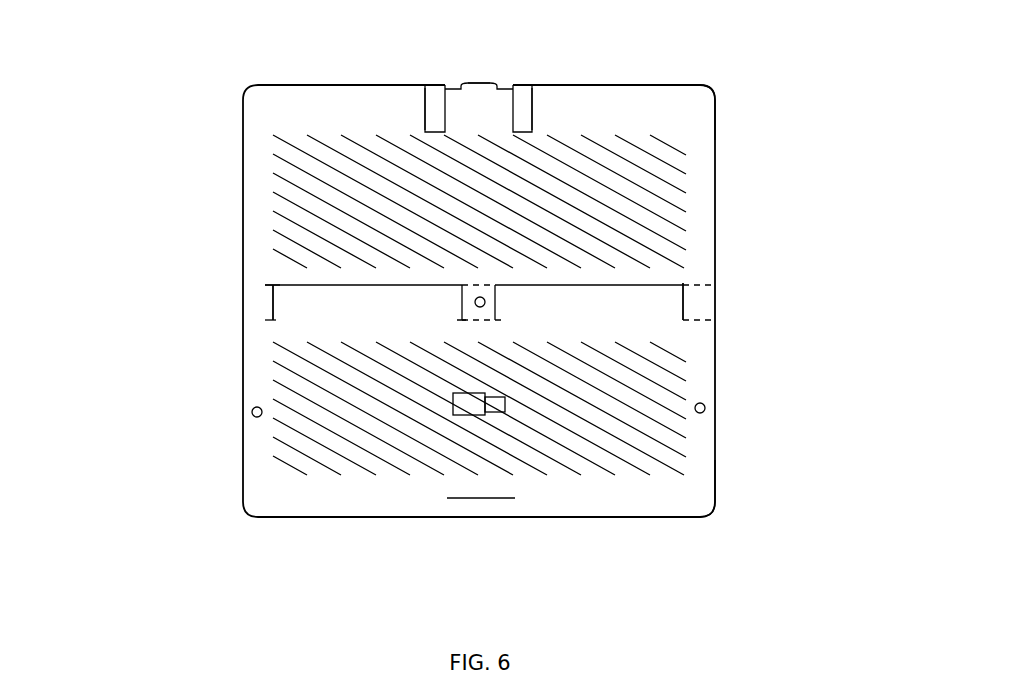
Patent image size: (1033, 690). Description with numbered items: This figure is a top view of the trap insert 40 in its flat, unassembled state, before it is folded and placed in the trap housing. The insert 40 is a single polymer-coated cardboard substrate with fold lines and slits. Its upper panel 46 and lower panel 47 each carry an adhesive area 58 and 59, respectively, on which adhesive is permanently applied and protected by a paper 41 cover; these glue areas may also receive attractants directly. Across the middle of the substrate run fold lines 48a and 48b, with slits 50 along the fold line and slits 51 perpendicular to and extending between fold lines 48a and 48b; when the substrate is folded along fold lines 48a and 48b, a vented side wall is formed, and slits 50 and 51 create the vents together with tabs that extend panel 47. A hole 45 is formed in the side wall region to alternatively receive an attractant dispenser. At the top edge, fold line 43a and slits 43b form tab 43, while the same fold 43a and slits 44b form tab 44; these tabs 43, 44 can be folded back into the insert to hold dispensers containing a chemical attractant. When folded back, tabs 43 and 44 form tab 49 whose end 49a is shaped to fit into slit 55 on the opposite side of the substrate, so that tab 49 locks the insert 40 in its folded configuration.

The trap insert 40 is at (200, 405).
The paper cover 41 is at (272, 165).
The tab 43 is at (426, 86).
The fold line 43a is at (481, 131).
The slits 43b is at (423, 100).
The tab 44 is at (522, 85).
The slits 44b is at (535, 105).
The hole 45 is at (462, 302).
The upper panel 46 is at (676, 95).
The lower panel 47 is at (677, 514).
The fold line 48a is at (259, 287).
The fold line 48b is at (259, 320).
The tab 49 is at (459, 92).
The end of tab 49a is at (481, 83).
The slits 50 is at (636, 284).
The slits 51 is at (270, 300).
The slit 55 is at (481, 500).
The adhesive area 58 is at (681, 190).
The adhesive area 59 is at (686, 430).